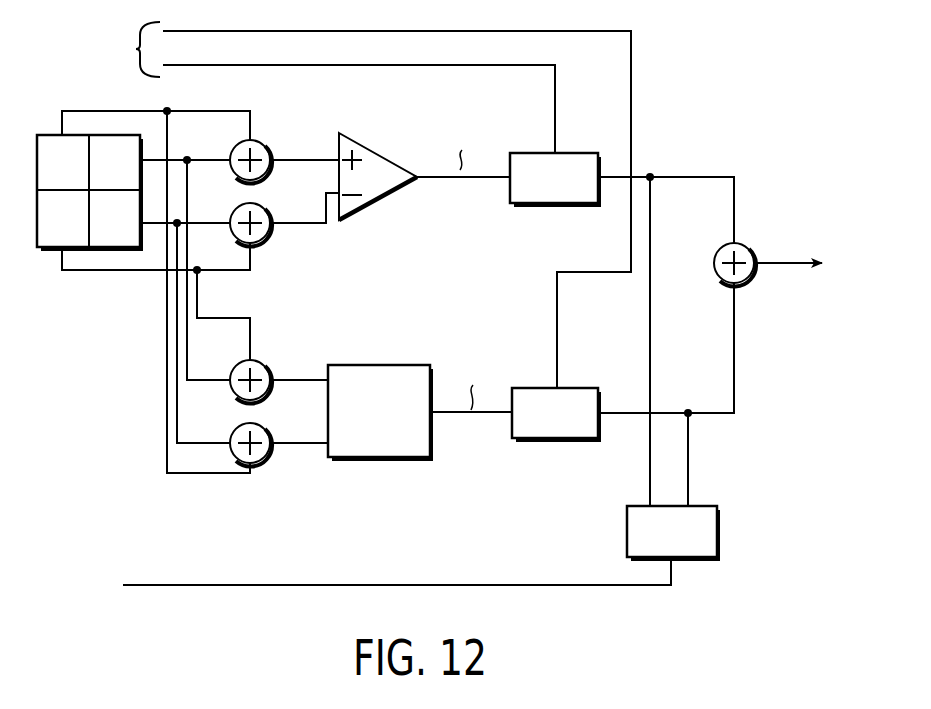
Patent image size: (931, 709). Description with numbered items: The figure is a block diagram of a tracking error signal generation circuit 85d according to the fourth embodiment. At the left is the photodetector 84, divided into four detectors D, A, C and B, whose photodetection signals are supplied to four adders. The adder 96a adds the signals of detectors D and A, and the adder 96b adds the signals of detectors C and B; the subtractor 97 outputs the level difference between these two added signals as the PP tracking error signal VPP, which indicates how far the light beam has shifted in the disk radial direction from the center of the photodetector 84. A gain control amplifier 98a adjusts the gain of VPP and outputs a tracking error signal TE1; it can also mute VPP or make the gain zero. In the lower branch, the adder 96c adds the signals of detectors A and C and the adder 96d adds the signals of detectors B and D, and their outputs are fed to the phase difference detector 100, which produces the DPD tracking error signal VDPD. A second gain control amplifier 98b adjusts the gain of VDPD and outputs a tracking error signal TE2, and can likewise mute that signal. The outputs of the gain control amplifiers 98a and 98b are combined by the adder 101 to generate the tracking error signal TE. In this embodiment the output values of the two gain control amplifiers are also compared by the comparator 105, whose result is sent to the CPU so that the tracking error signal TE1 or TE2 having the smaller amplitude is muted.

The photodetector 84 is at (47, 260).
The tracking error signal generation circuit 85d is at (421, 310).
The adder 96a is at (266, 148).
The adder 96b is at (266, 236).
The adder 96c is at (266, 368).
The adder 96d is at (260, 462).
The subtractor 97 is at (372, 204).
The gain control amplifier 98a is at (576, 152).
The gain control amplifier 98b is at (578, 387).
The phase difference detector 100 is at (386, 364).
The adder 101 is at (750, 278).
The comparator 105 is at (719, 531).